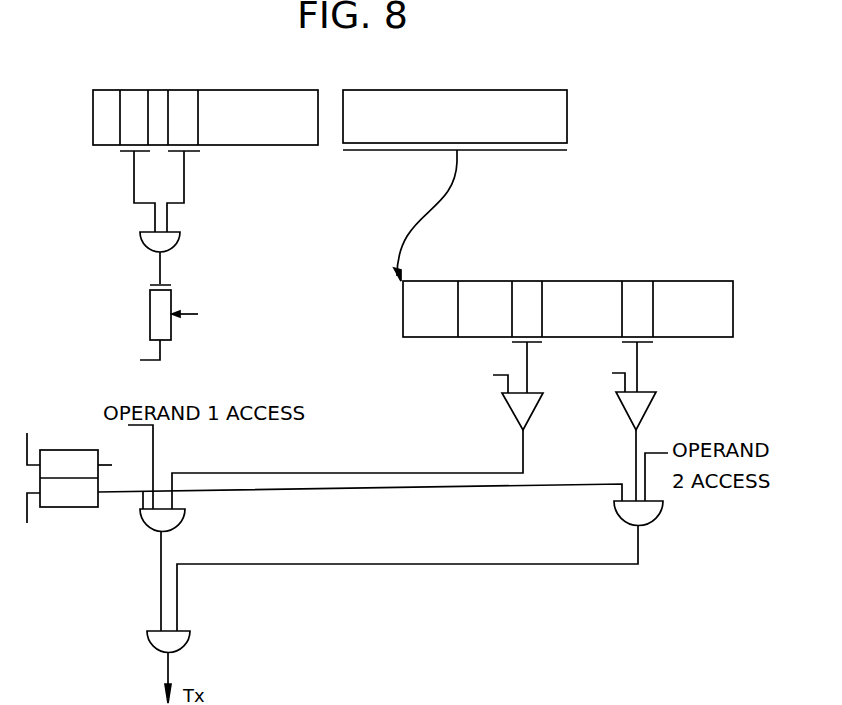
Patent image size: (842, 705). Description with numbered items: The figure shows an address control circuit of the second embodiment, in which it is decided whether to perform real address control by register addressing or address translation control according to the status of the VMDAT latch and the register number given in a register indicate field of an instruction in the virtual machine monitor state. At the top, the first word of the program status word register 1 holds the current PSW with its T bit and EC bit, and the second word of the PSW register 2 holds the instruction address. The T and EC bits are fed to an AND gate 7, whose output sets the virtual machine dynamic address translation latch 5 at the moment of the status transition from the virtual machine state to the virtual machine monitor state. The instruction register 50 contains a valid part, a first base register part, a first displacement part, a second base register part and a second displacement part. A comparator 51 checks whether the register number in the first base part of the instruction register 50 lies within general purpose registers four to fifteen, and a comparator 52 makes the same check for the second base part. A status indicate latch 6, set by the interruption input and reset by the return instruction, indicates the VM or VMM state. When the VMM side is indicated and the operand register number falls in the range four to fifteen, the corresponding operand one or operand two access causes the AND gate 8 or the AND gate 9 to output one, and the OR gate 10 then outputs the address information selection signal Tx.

The first word of program status word register 1 is at (305, 90).
The second word of PSW register 2 is at (550, 90).
The virtual machine dynamic address translation latch 5 is at (172, 340).
The status indicate latch 6 is at (93, 507).
The AND gate 7 is at (178, 241).
The AND gate 8 is at (183, 517).
The AND gate 9 is at (661, 512).
The OR gate 10 is at (188, 637).
The instruction register 50 is at (403, 328).
The comparator 51 is at (536, 418).
The comparator 52 is at (648, 412).